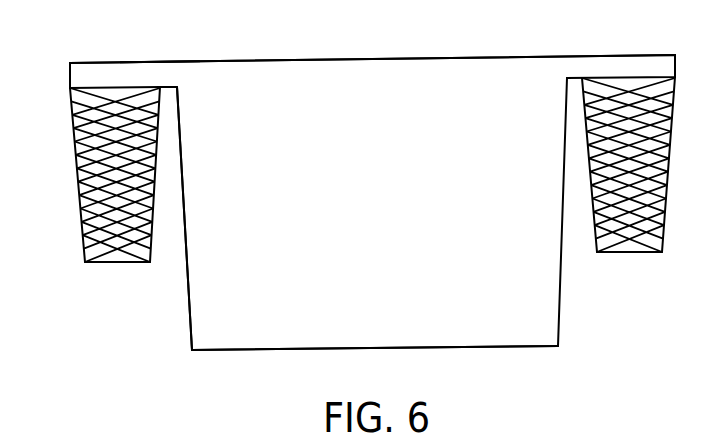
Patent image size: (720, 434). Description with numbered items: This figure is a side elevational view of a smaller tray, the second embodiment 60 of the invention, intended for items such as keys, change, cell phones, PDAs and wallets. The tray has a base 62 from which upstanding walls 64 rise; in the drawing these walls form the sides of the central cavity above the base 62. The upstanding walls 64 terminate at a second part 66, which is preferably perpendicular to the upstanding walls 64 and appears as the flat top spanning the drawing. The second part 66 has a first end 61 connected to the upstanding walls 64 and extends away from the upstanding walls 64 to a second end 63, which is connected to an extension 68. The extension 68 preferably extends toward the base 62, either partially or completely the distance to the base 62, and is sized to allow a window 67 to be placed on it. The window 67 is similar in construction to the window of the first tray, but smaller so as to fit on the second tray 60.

The second embodiment tray 60 is at (186, 318).
The first end 61 is at (212, 62).
The base 62 is at (285, 351).
The second end 63 is at (69, 70).
The upstanding walls 64 is at (186, 264).
The second part 66 is at (162, 62).
The window 67 is at (75, 177).
The extension 68 is at (72, 130).